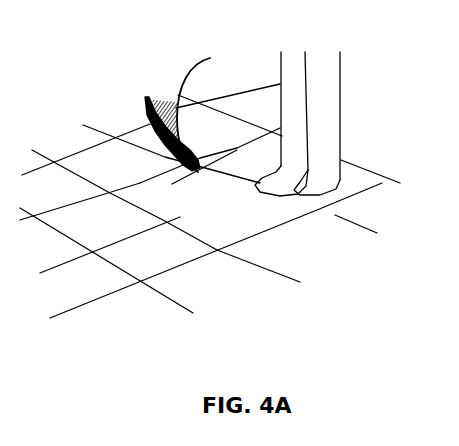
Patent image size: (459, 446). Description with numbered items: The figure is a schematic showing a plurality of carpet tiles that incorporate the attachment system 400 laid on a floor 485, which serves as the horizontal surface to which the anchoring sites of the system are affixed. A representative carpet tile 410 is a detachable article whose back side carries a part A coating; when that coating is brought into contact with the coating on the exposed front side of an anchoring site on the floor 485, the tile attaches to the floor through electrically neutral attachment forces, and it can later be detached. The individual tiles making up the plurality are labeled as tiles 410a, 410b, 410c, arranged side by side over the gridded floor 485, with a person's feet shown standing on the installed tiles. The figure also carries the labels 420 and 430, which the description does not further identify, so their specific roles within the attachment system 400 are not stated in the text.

The attachment system 400 is at (154, 48).
The carpet tile 410 is at (209, 109).
The projected indicator region 410a is at (210, 155).
The projected indicator region 410b is at (123, 230).
The projected indicator region 410c is at (80, 190).
The hatched projected region 420 is at (173, 121).
The shaded projected streak 430 is at (147, 138).
The floor 485 is at (102, 226).